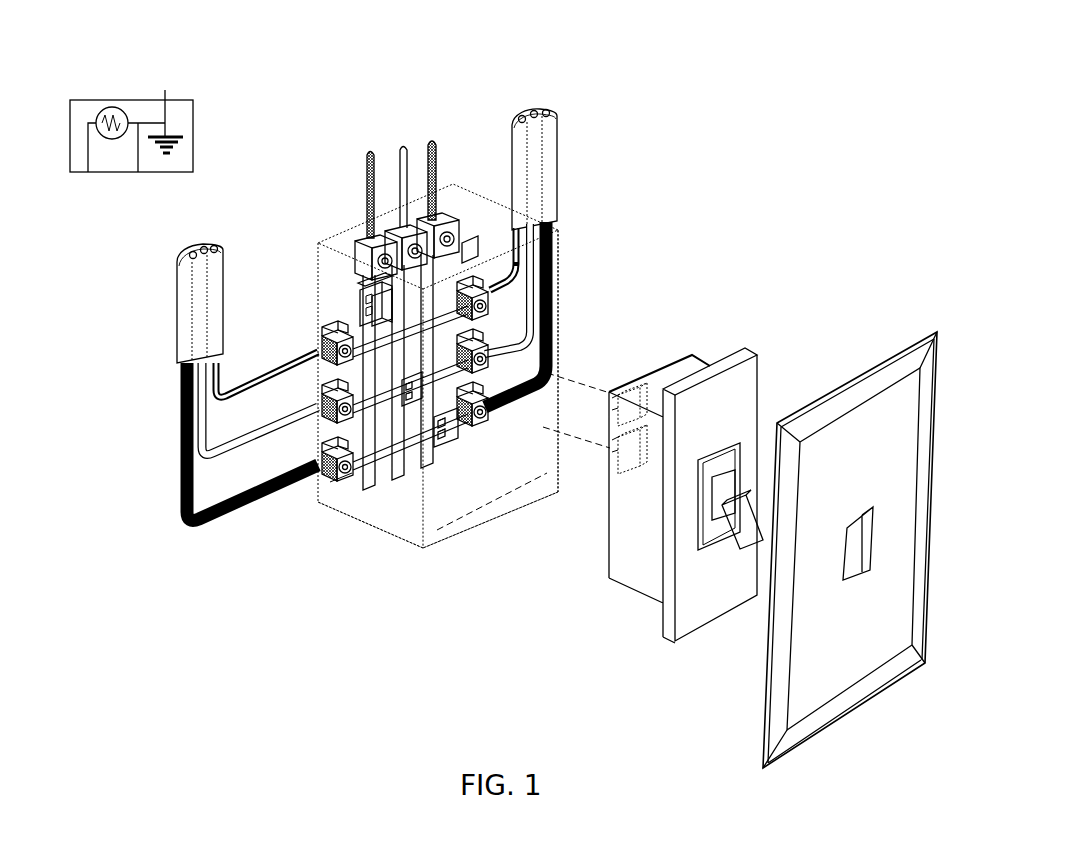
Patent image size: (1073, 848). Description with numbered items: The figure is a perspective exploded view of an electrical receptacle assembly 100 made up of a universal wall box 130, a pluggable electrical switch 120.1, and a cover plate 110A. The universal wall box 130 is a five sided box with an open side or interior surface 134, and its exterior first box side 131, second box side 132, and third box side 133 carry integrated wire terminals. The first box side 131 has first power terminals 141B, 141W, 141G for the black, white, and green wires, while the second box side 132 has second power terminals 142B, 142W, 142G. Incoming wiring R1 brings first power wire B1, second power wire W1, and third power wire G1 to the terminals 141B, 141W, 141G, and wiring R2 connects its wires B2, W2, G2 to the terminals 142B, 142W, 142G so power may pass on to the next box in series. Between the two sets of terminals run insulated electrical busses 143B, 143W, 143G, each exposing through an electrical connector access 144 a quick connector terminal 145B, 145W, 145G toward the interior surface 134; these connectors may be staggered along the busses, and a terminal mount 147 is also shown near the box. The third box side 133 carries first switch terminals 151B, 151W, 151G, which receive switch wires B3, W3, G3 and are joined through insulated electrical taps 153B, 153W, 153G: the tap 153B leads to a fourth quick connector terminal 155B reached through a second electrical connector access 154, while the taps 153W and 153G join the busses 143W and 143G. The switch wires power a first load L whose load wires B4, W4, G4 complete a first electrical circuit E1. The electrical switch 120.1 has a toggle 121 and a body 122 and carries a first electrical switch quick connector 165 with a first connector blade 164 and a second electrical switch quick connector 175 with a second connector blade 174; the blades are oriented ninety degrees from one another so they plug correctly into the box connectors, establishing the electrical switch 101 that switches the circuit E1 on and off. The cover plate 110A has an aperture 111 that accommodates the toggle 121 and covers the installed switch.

The electrical receptacle assembly 100 is at (581, 395).
The electrical switch 101 is at (698, 154).
The cover plate 110A is at (904, 543).
The aperture 111 is at (855, 555).
The electrical switch 120.1 is at (716, 506).
The toggle 121 is at (748, 533).
The housing or body 122 is at (663, 562).
The universal wall box 130 is at (405, 508).
The first box side 131 is at (352, 500).
The second box side 132 is at (579, 292).
The third box side 133 is at (448, 205).
The interior surface 134 is at (563, 495).
The first power terminal (black) 141B is at (336, 333).
The first power terminal (white) 141W is at (318, 400).
The first power terminal (green) 141G is at (320, 450).
The second power terminal (black) 142B is at (472, 288).
The second power terminal (white) 142W is at (486, 343).
The second power terminal (green) 142G is at (486, 428).
The first insulated electrical bus 143B is at (352, 340).
The second insulated electrical bus 143W is at (494, 388).
The third insulated electrical bus 143G is at (366, 540).
The electrical connector access 144 is at (448, 449).
The first electrical quick connector terminal 145B is at (360, 305).
The second electrical quick connector terminal 145W is at (412, 470).
The third electrical quick connector terminal 145G is at (470, 458).
The terminal mount 147 is at (330, 474).
The first switch terminal (black) 151B is at (371, 240).
The first switch terminal (white) 151W is at (455, 222).
The first switch terminal (green) 151G is at (462, 214).
The first insulated electrical tap 153B is at (375, 296).
The second insulated electrical tap 153W is at (381, 540).
The third insulated electrical tap 153G is at (480, 238).
The electrical connector access 154 is at (362, 278).
The fourth electrical quick connector terminal 155B is at (366, 292).
The first connector blade 164 is at (614, 468).
The first electrical switch quick connector 165 is at (622, 458).
The second connector blade 174 is at (622, 392).
The second electrical switch quick connector 175 is at (633, 433).
The first electrical circuit E1 is at (306, 101).
The first load L is at (162, 132).
The third load wire G4 is at (165, 109).
The first load wire B4 is at (85, 161).
The second load wire W4 is at (145, 161).
The wiring R1 is at (187, 300).
The wiring R2 is at (535, 147).
The first power wire B1 is at (279, 373).
The second power wire W1 is at (247, 452).
The third power wire G1 is at (247, 515).
The first power wire B2 is at (514, 270).
The second power wire W2 is at (502, 344).
The third power wire G2 is at (538, 375).
The first switch wire B3 is at (370, 158).
The second switch wire W3 is at (403, 146).
The third switch wire G3 is at (437, 140).